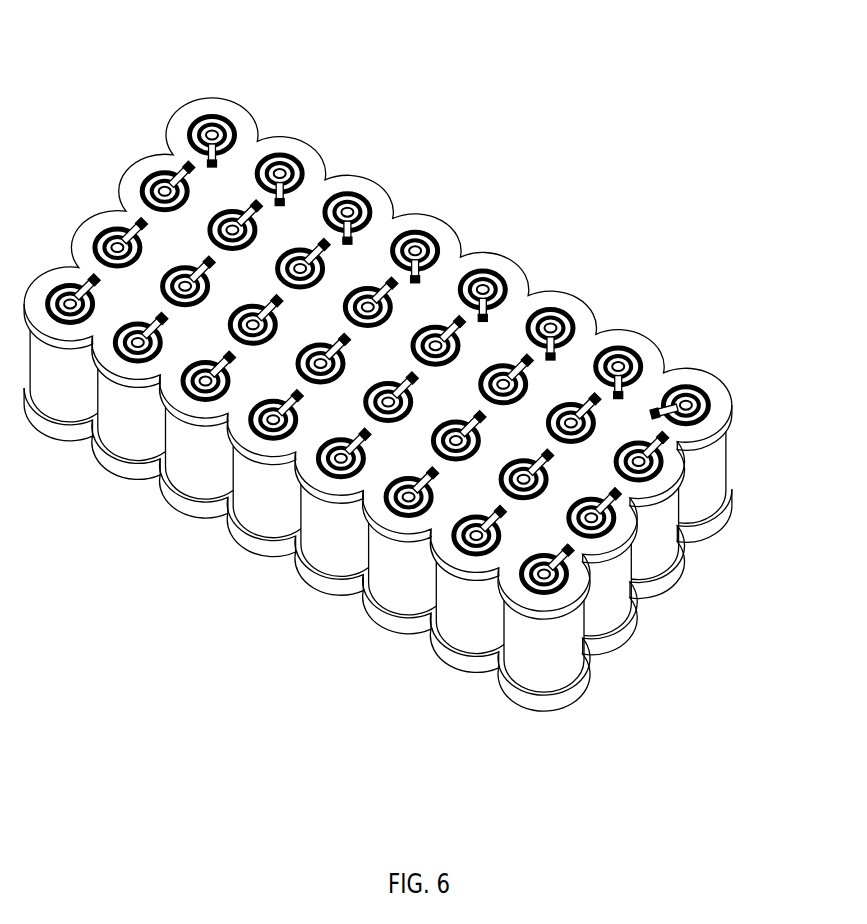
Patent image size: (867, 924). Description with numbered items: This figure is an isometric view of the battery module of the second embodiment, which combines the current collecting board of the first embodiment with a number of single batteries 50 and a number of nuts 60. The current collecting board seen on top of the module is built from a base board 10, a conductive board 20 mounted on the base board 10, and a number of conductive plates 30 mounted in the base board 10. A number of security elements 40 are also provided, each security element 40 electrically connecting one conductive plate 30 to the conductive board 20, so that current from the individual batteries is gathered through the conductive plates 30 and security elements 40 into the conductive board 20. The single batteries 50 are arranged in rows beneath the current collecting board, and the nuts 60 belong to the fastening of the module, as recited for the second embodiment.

The base board 10 is at (213, 424).
The conductive board 20 is at (352, 263).
The conductive plate 30 is at (485, 273).
The security element 40 is at (565, 313).
The single battery 50 is at (363, 590).
The nut 60 is at (633, 348).